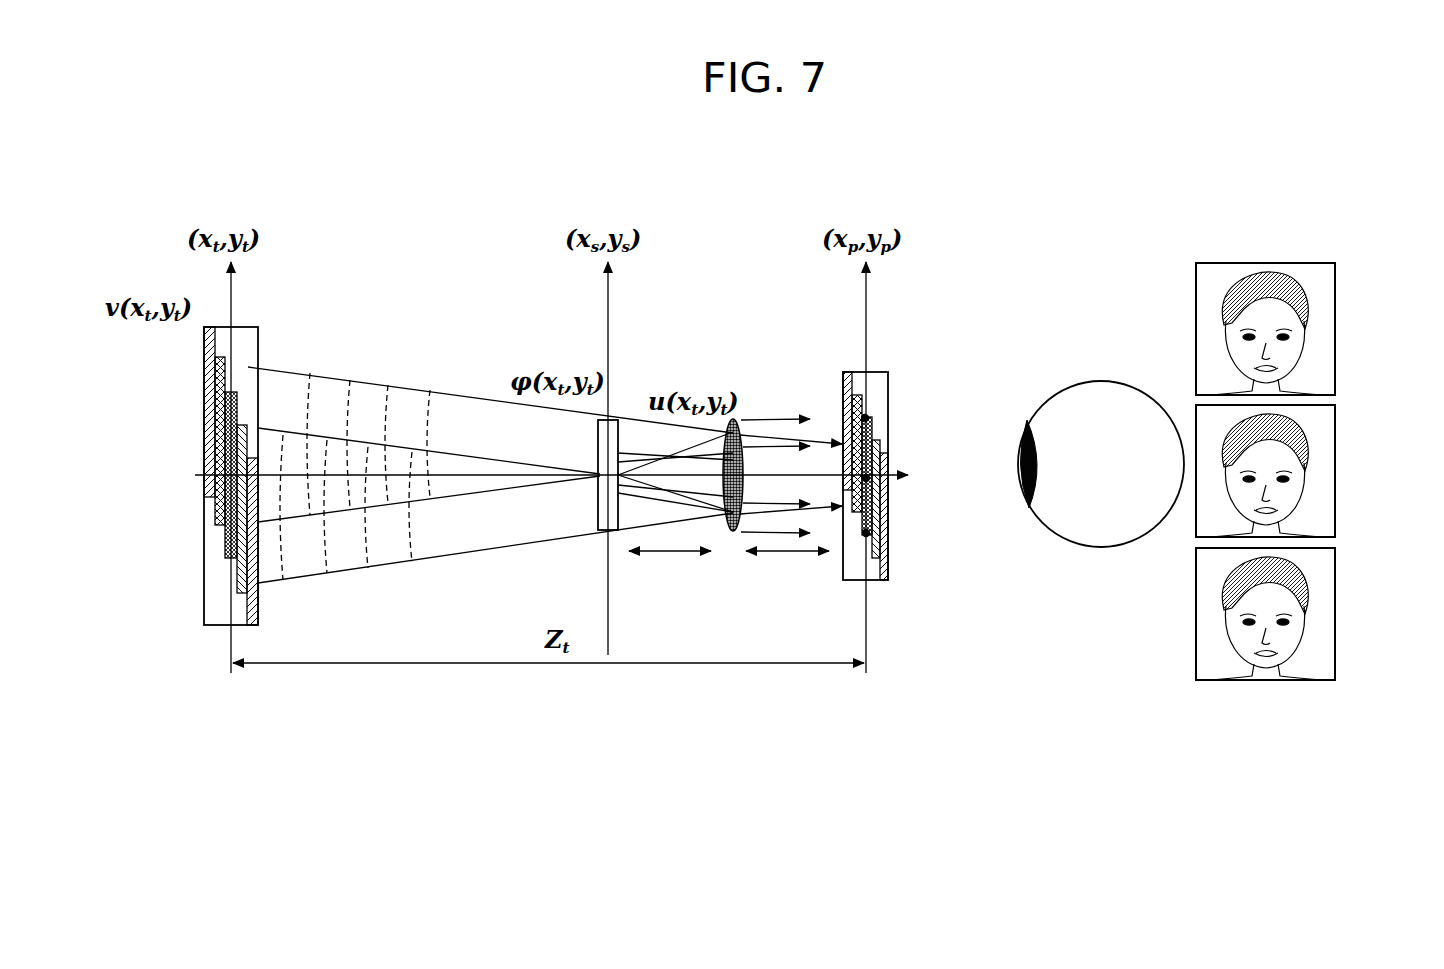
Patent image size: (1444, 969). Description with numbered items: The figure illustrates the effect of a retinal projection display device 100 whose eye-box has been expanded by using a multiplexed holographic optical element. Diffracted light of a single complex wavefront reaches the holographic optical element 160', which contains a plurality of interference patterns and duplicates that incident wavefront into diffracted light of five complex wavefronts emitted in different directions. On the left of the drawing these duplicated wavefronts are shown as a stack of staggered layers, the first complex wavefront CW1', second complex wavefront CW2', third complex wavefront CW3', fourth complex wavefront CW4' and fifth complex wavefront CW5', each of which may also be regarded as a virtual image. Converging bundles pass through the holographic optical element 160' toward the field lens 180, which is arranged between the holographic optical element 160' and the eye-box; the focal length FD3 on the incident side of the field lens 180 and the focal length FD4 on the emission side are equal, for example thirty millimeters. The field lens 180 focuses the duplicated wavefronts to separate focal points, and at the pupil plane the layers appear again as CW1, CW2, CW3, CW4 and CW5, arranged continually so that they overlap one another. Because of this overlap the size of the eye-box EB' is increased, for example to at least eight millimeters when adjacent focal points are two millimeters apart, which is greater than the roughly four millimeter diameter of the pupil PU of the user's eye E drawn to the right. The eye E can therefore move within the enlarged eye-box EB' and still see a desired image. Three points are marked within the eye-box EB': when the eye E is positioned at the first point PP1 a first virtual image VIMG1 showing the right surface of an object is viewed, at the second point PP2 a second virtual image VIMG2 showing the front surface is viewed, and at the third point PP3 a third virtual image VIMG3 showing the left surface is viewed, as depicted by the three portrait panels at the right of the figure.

The retinal projection display device 100 is at (1206, 165).
The holographic optical element 160' is at (630, 443).
The field lens 180 is at (738, 420).
The first complex wavefront CW1' is at (188, 541).
The second complex wavefront CW2' is at (182, 509).
The third complex wavefront CW3' is at (177, 475).
The fourth complex wavefront CW4' is at (171, 441).
The fifth complex wavefront CW5' is at (166, 412).
The first color wavelength layer (pupil plane) CW1 is at (920, 521).
The second color wavelength layer (pupil plane) CW2 is at (916, 501).
The third color wavelength layer (pupil plane) CW3 is at (911, 476).
The fourth color wavelength layer (pupil plane) CW4 is at (906, 450).
The fifth color wavelength layer (pupil plane) CW5 is at (902, 428).
The first point PP1 is at (870, 533).
The second point PP2 is at (870, 481).
The third point PP3 is at (868, 418).
The eye-box EB' is at (882, 450).
The focal length at the side of the incident surface of the field lens FD3 is at (670, 569).
The focal length at the side of the emission surface of the field lens FD4 is at (787, 569).
The pupil PU is at (1023, 500).
The user's eye E is at (1108, 546).
The first virtual image VIMG1 is at (1337, 613).
The second virtual image VIMG2 is at (1337, 471).
The third virtual image VIMG3 is at (1337, 328).